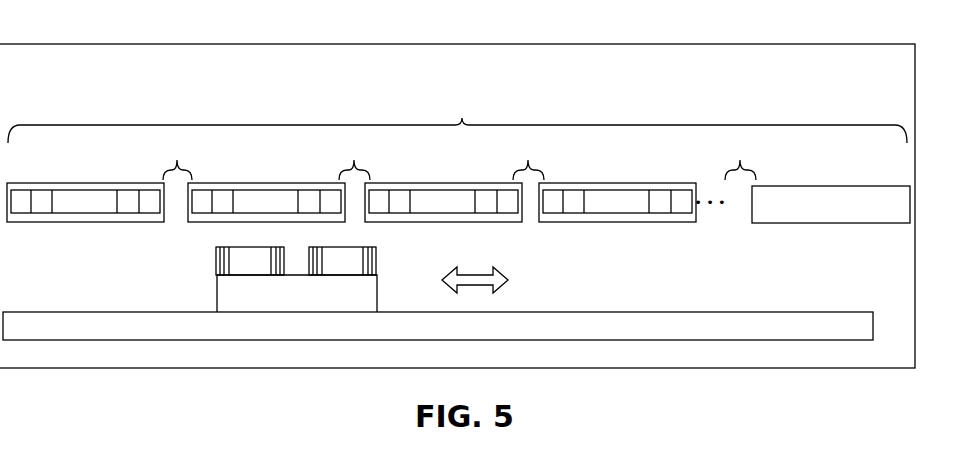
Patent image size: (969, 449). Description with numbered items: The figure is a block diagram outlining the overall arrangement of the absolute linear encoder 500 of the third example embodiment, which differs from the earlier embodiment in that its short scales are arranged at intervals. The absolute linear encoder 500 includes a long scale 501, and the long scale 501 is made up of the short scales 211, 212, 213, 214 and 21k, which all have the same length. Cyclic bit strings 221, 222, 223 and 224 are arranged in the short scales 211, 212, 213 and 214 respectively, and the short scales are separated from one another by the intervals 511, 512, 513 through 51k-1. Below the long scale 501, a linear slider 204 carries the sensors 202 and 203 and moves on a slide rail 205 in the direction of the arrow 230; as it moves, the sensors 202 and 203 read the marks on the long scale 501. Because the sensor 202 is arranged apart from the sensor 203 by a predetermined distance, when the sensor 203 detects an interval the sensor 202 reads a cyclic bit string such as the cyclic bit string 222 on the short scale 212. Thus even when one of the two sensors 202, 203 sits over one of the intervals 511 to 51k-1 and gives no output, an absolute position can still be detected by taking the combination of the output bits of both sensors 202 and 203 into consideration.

The absolute linear encoder 500 is at (45, 44).
The long scale 501 is at (457, 119).
The short scale 211 is at (33, 183).
The cyclic bit string 221 is at (88, 190).
The interval 511 is at (177, 163).
The short scale 212 is at (208, 183).
The cyclic bit string 222 is at (263, 190).
The interval 512 is at (354, 161).
The short scale 213 is at (389, 183).
The cyclic bit string 223 is at (441, 190).
The interval 513 is at (528, 161).
The short scale 214 is at (560, 183).
The cyclic bit string 224 is at (616, 190).
The interval 51k-1 is at (739, 161).
The short scale 21k is at (792, 186).
The sensor 202 is at (216, 262).
The sensor 203 is at (376, 262).
The linear slider 204 is at (377, 296).
The slide rail 205 is at (795, 312).
The arrow 230 is at (473, 268).